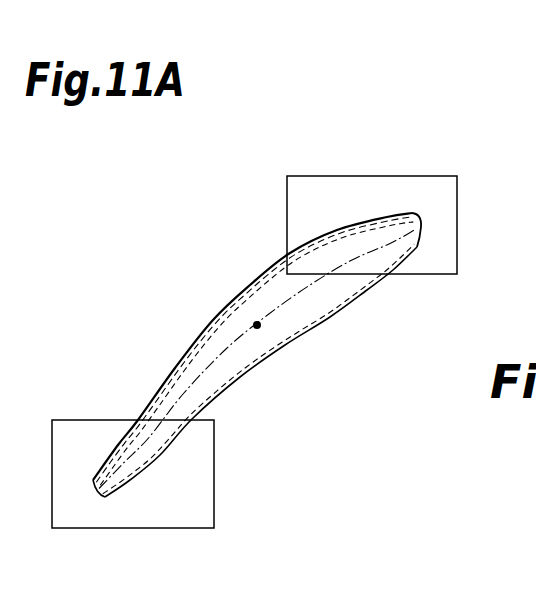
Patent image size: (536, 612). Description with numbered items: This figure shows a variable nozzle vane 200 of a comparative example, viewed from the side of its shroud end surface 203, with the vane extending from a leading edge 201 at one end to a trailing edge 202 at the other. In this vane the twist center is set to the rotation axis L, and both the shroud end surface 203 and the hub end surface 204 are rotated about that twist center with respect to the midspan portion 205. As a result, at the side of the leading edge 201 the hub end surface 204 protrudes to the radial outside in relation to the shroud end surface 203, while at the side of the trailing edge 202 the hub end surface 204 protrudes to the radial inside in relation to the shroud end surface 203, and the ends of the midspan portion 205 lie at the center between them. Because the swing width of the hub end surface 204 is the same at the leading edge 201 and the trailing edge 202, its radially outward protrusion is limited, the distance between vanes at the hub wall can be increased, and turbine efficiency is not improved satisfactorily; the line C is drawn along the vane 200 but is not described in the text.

The variable nozzle vane 200 is at (245, 249).
The leading edge 201 is at (424, 216).
The trailing edge 202 is at (93, 496).
The shroud end surface 203 is at (307, 308).
The hub end surface 204 is at (343, 225).
The midspan portion 205 is at (388, 214).
The camber line C is at (227, 352).
The rotation axis L is at (258, 329).